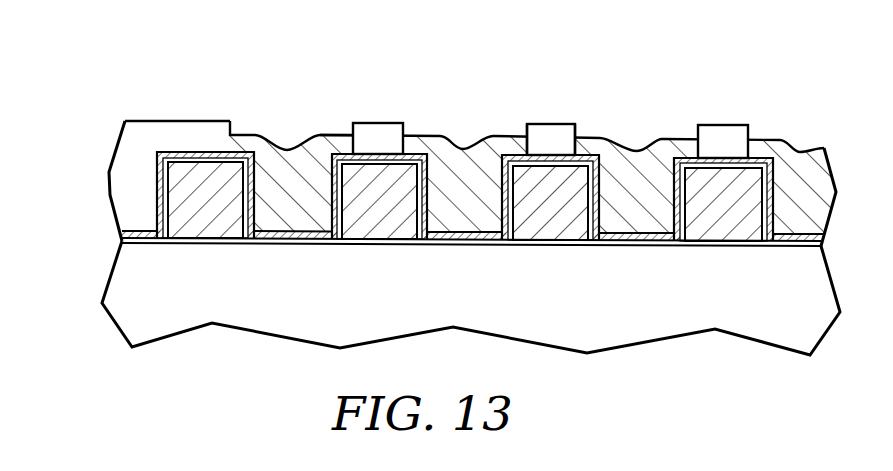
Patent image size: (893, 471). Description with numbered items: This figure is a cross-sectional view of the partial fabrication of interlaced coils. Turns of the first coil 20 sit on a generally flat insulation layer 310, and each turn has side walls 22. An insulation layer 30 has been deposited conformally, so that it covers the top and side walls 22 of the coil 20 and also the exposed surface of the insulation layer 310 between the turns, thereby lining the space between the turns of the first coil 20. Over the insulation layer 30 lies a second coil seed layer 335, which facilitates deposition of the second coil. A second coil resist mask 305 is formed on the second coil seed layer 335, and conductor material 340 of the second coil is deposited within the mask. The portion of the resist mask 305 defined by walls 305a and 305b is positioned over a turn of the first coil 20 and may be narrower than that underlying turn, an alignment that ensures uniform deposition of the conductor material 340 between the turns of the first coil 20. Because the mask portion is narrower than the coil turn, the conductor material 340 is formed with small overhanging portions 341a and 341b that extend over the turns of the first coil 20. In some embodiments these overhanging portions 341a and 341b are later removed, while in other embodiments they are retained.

The first coil 20 is at (372, 228).
The side walls of the first coil 22 is at (337, 207).
The insulation layer 30 is at (143, 240).
The insulation layer 310 is at (143, 293).
The second coil seed layer 335 is at (140, 230).
The conductor material 340 is at (285, 153).
The overhanging portion 341a is at (248, 140).
The overhanging portion 341b is at (340, 137).
The second coil resist mask 305 is at (145, 137).
The resist mask wall 305a is at (525, 131).
The resist mask wall 305b is at (582, 133).